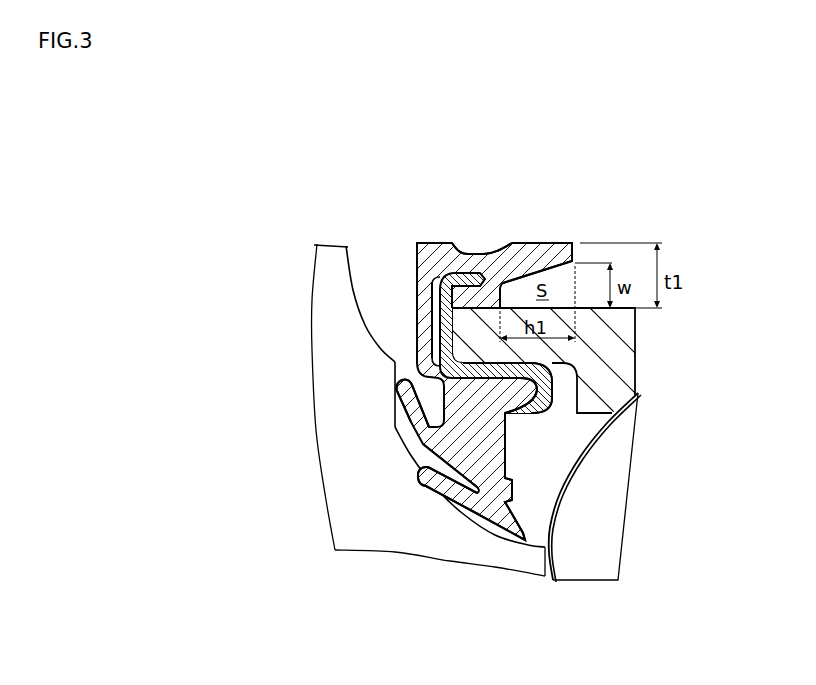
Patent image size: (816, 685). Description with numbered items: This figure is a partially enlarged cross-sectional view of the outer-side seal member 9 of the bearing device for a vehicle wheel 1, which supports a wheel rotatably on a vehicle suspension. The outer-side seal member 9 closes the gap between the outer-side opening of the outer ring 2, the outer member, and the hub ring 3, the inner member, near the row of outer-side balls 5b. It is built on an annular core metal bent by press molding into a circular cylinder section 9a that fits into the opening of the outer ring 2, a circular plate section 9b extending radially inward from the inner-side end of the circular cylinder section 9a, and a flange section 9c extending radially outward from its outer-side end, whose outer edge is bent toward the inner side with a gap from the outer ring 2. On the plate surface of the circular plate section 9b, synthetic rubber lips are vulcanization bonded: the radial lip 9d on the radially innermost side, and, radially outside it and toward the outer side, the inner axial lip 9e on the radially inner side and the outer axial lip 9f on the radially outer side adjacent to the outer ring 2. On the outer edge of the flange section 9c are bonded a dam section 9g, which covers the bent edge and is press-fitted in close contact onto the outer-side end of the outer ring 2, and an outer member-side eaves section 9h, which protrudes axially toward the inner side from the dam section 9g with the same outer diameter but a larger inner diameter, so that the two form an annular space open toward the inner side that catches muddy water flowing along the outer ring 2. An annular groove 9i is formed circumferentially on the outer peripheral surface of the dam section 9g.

The bearing device for a vehicle wheel 1 is at (261, 148).
The outer ring 2 is at (622, 352).
The hub ring 3 is at (373, 538).
The outer-side balls 5b is at (610, 540).
The outer-side seal member 9 is at (418, 371).
The circular cylinder section 9a is at (433, 372).
The circular plate section 9b is at (466, 432).
The flange section 9c is at (417, 319).
The radial lip 9d is at (470, 525).
The inner axial lip 9e is at (439, 474).
The outer axial lip 9f is at (400, 391).
The dam section 9g is at (447, 242).
The outer member-side eaves section 9h is at (537, 243).
The groove 9i is at (481, 252).